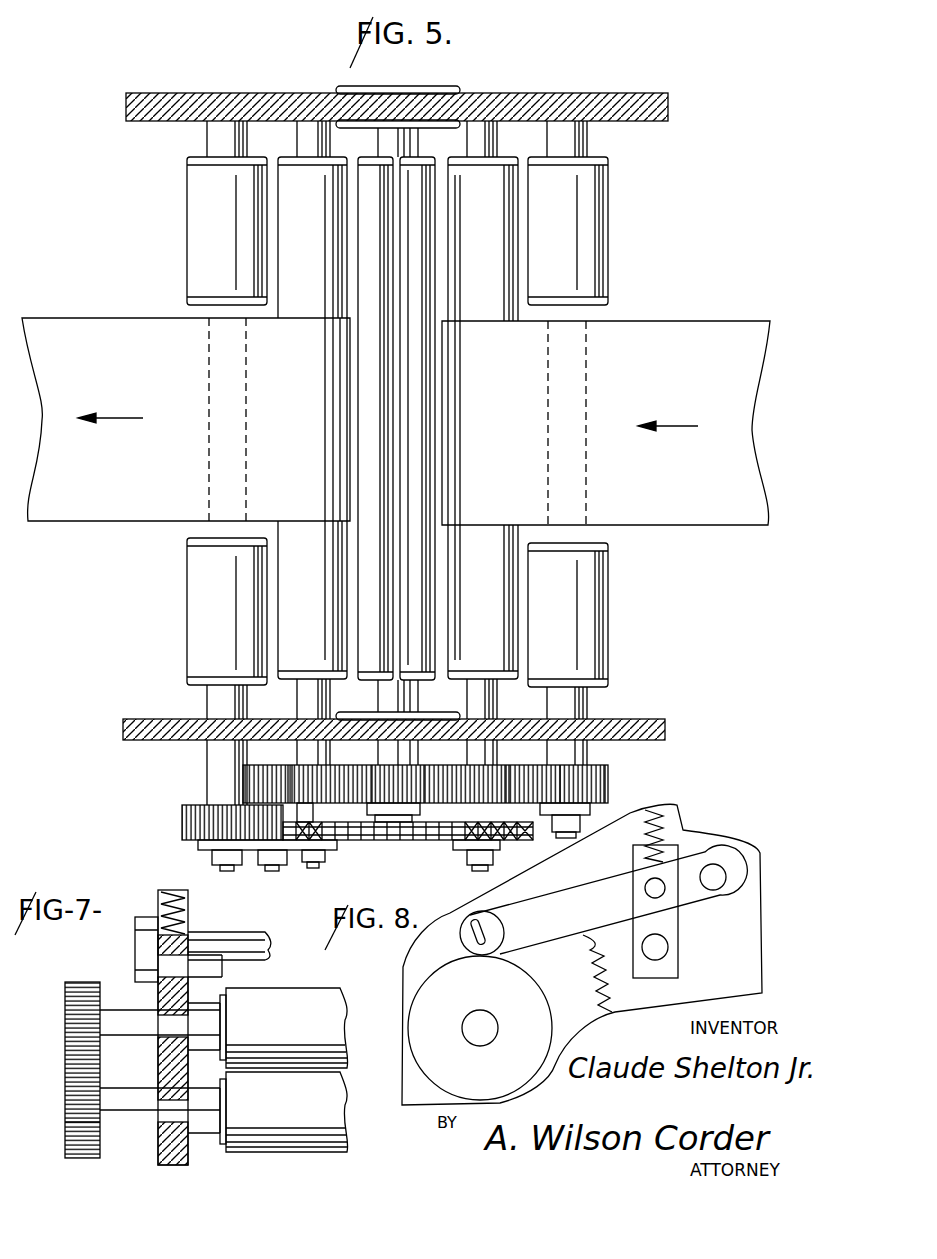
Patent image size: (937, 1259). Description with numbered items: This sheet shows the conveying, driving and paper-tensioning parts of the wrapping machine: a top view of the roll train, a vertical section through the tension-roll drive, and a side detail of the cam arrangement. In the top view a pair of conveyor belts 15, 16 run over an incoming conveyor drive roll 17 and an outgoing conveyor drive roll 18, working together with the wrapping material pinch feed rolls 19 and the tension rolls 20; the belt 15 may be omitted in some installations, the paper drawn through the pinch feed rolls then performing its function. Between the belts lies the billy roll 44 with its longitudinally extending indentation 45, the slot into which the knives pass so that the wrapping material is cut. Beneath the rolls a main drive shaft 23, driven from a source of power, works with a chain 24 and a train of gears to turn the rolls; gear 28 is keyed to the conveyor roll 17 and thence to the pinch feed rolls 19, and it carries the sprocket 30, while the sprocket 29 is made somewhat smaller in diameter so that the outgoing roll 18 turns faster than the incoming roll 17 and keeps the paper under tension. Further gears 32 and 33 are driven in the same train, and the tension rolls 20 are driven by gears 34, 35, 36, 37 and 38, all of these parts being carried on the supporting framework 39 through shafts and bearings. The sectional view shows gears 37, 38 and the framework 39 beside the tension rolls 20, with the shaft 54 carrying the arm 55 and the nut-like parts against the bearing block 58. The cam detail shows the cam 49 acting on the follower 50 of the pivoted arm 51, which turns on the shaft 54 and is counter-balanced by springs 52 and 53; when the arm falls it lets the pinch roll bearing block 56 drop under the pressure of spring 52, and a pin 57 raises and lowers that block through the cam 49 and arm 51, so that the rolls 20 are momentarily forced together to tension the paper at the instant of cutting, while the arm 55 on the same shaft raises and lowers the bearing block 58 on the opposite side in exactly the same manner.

In FIG. 5, the conveyor belt 15 is at (680, 325).
In FIG. 5, the conveyor belt 16 is at (113, 322).
In FIG. 5, the incoming conveyor drive roll 17 is at (485, 530).
In FIG. 5, the outgoing conveyor drive roll 18 is at (292, 530).
In FIG. 5, the wrapping material pinch feed rolls 19 is at (598, 578).
In FIG. 5, the tension rolls 20 is at (192, 585).
In FIG. 7, the tension rolls 20 is at (335, 1092).
In FIG. 5, the main drive shaft 23 is at (410, 772).
In FIG. 5, the chain 24 is at (390, 843).
In FIG. 5, the gear 28 is at (497, 778).
In FIG. 5, the sprocket 29 is at (305, 828).
In FIG. 5, the sprocket 30 is at (462, 845).
In FIG. 5, the gear 32 is at (600, 790).
In FIG. 5, the gear 33 is at (385, 785).
In FIG. 5, the gear 34 is at (282, 815).
In FIG. 5, the gear 35 is at (245, 778).
In FIG. 5, the gear 36 is at (297, 775).
In FIG. 5, the gear 37 is at (182, 825).
In FIG. 7, the gear 37 is at (66, 1132).
In FIG. 7, the gear 38 is at (66, 1048).
In FIG. 5, the supporting framework 39 is at (182, 97).
In FIG. 8, the supporting framework 39 is at (748, 868).
In FIG. 7, the supporting framework 39 is at (165, 1144).
In FIG. 5, the billy roll 44 is at (430, 445).
In FIG. 5, the longitudinally extending indentation 45 is at (395, 372).
In FIG. 8, the cam 49 is at (533, 997).
In FIG. 8, the cam follower 50 is at (497, 935).
In FIG. 8, the pivoted arm 51 is at (585, 893).
In FIG. 8, the spring 52 is at (670, 828).
In FIG. 7, the spring 52 is at (172, 895).
In FIG. 8, the spring 53 is at (610, 1005).
In FIG. 8, the shaft 54 is at (720, 888).
In FIG. 7, the shaft 54 is at (266, 958).
In FIG. 7, the arm 55 is at (136, 953).
In FIG. 8, the pinch roll bearing block 56 is at (670, 925).
In FIG. 8, the pin 57 is at (645, 892).
In FIG. 7, the bearing block 58 is at (178, 990).